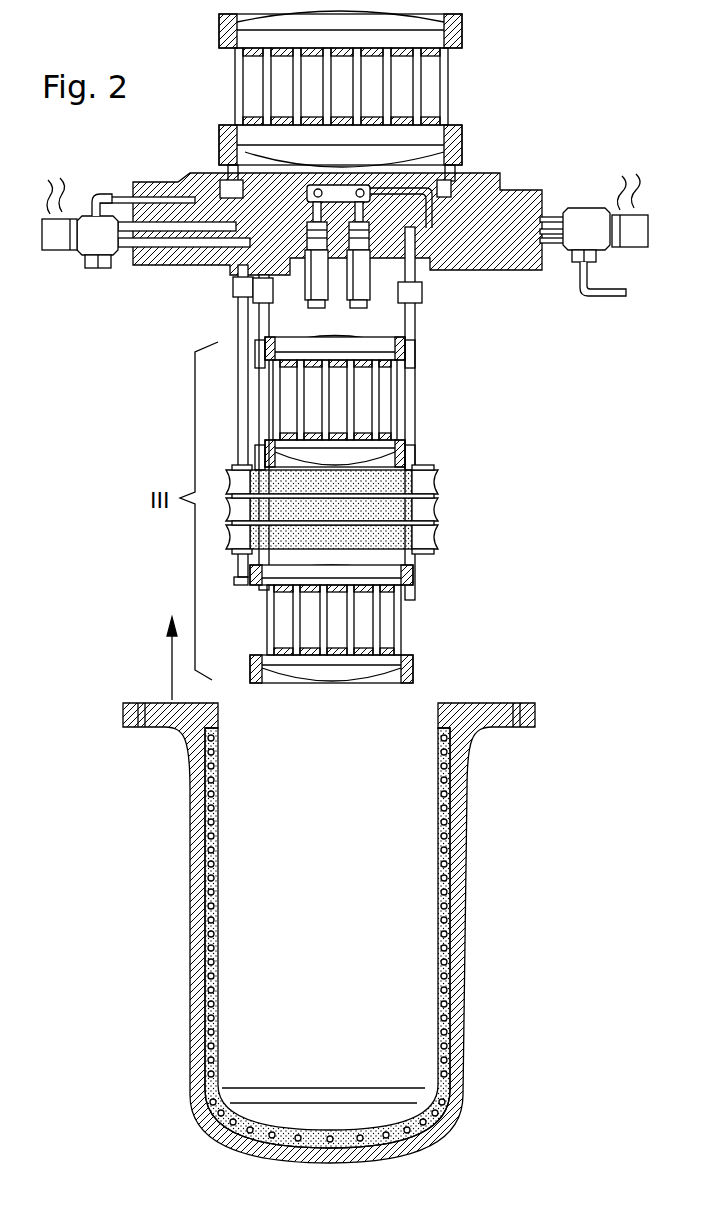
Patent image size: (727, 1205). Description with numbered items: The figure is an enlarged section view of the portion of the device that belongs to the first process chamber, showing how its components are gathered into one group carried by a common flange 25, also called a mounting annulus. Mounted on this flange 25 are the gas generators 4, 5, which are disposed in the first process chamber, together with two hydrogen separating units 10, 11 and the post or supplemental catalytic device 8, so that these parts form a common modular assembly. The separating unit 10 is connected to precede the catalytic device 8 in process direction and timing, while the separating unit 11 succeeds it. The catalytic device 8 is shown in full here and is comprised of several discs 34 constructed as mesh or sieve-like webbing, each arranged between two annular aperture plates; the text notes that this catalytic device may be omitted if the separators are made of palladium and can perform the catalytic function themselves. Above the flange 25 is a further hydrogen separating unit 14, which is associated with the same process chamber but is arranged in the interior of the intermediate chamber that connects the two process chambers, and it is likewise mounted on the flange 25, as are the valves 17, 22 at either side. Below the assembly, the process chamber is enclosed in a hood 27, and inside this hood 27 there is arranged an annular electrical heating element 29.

The hydrogen separating unit 14 is at (458, 97).
The valve 17 is at (580, 226).
The valve 22 is at (98, 252).
The flange 25 is at (508, 280).
The gas generator 5 is at (268, 305).
The gas generator 4 is at (374, 298).
The hydrogen separating unit 11 is at (386, 404).
The post or supplemental catalytic device 8 is at (442, 493).
The discs 34 is at (438, 518).
The hydrogen separating unit 10 is at (386, 623).
The hood 27 is at (454, 862).
The annular electrical heating element 29 is at (440, 925).